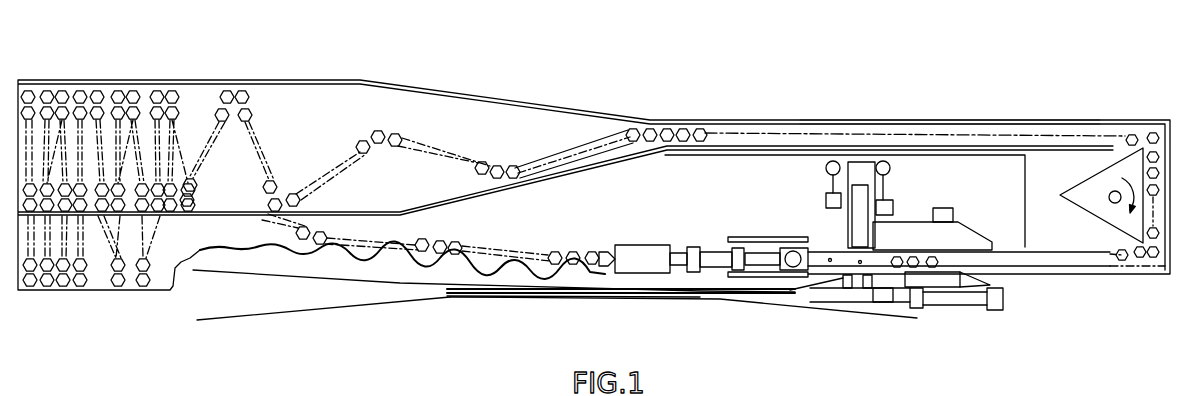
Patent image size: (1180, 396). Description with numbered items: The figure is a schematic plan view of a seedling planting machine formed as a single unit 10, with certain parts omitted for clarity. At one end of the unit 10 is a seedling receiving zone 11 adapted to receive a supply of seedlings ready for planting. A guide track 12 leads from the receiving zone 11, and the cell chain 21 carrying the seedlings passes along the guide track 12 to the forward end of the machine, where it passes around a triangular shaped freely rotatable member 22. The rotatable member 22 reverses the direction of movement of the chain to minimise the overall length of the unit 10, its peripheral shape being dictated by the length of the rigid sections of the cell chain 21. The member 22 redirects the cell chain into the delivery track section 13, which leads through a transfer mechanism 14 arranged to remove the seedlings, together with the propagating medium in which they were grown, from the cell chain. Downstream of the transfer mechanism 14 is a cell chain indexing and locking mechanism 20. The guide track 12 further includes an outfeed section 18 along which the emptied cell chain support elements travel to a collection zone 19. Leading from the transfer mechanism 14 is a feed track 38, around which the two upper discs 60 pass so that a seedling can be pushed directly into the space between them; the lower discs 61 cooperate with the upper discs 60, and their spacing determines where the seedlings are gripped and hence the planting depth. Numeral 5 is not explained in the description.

The rail 5 is at (580, 303).
The unit 10 is at (694, 96).
The seedling receiving zone 11 is at (95, 72).
The guide track 12 is at (922, 119).
The delivery track section 13 is at (1022, 278).
The transfer mechanism 14 is at (806, 206).
The outfeed section 18 is at (582, 248).
The collection zone 19 is at (108, 298).
The cell chain indexing and locking mechanism 20 is at (692, 226).
The cell chain 21 is at (577, 143).
The triangular shaped freely rotatable member 22 is at (1122, 165).
The feed track 38 is at (846, 298).
The upper discs 60 is at (640, 300).
The lower discs 61 is at (256, 275).